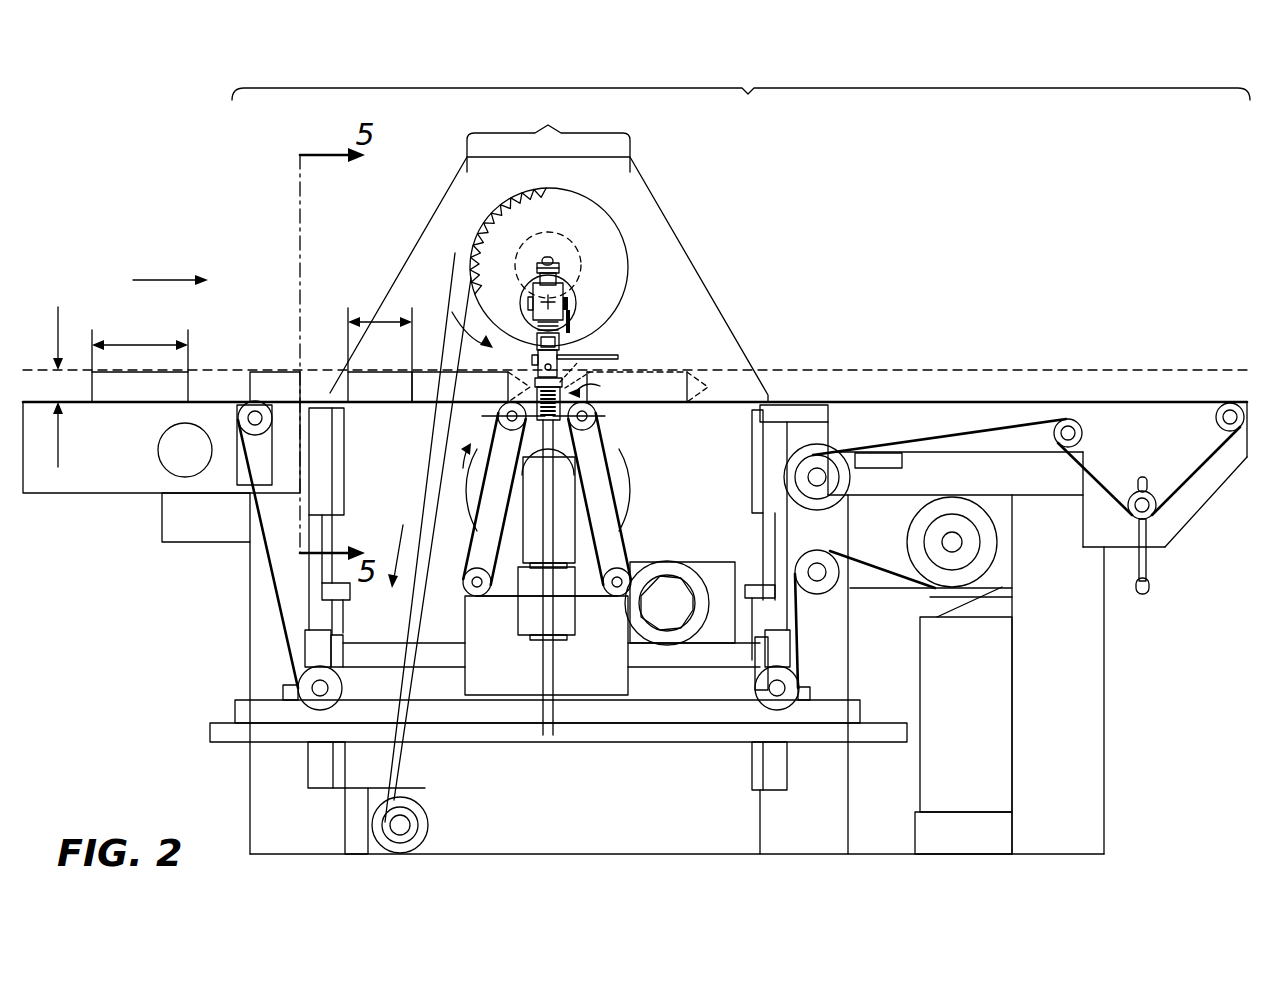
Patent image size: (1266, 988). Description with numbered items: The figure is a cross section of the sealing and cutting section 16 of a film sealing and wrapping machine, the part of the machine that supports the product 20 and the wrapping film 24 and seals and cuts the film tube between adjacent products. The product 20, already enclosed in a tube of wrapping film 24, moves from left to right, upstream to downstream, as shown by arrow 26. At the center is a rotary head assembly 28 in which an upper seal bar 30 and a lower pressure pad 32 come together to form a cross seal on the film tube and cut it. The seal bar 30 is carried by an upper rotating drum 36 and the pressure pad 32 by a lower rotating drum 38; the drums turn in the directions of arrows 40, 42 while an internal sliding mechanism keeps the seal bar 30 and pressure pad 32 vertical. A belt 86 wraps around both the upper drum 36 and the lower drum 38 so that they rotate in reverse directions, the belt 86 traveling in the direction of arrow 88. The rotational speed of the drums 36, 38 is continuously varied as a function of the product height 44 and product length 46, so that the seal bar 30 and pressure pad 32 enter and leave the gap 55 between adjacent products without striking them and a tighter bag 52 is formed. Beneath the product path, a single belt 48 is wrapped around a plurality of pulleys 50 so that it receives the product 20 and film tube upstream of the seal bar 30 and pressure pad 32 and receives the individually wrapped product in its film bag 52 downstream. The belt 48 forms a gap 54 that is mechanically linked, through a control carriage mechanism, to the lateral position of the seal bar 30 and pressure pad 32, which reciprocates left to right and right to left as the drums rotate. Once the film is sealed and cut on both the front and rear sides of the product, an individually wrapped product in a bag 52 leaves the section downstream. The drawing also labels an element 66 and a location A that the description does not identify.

The sealing and cutting section 16 is at (636, 227).
The product 20 is at (140, 390).
The wrapping film 24 is at (222, 360).
The arrow 26 is at (166, 280).
The rotary head assembly 28 is at (548, 133).
The upper seal bar 30 is at (575, 370).
The lower pressure pad 32 is at (612, 410).
The upper rotating drum 36 is at (500, 195).
The lower rotating drum 38 is at (470, 497).
The arrow 40 is at (453, 270).
The arrow 42 is at (468, 470).
The product height 44 is at (58, 443).
The product length 46 is at (118, 343).
The belt 48 is at (267, 578).
The pulleys 50 is at (302, 675).
The bag 52 is at (698, 397).
The gap 54 is at (488, 400).
The gap 55 is at (380, 322).
The housing 66 is at (643, 217).
The belt 86 is at (425, 483).
The arrow 88 is at (400, 548).
The cutting point A is at (600, 386).